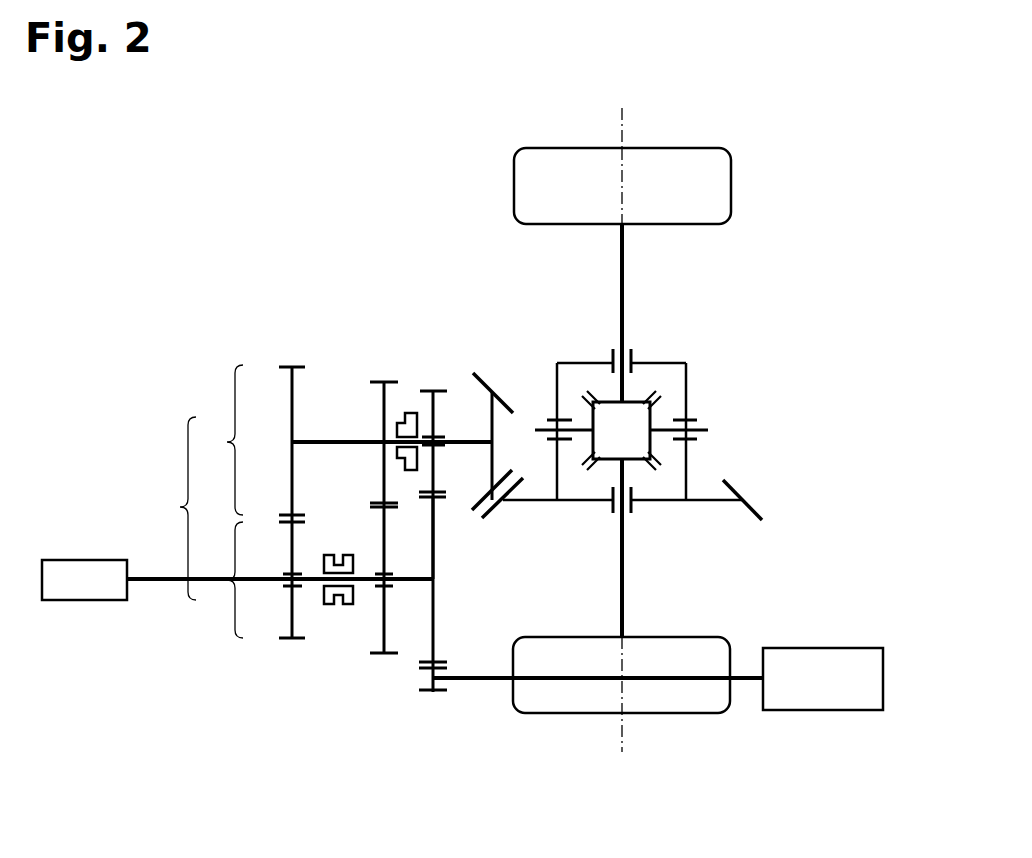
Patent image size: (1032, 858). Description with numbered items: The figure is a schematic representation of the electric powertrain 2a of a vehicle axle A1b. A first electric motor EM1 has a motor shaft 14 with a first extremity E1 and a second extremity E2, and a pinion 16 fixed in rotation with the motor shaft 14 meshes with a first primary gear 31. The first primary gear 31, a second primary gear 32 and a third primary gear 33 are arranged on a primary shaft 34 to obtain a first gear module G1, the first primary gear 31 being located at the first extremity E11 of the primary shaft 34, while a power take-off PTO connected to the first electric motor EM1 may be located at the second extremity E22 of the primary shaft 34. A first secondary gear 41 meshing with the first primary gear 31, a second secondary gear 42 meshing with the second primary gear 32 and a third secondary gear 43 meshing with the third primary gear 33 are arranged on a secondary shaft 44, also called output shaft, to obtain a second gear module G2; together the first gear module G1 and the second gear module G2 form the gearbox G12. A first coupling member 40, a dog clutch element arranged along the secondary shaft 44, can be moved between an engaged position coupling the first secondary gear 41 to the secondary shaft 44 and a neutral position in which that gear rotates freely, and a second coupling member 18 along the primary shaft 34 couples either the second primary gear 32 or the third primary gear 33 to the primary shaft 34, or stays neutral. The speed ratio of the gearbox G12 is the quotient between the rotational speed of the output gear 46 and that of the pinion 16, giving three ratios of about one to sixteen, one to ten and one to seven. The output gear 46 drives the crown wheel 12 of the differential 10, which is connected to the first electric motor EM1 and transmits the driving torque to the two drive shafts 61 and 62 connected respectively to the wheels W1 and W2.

The electric powertrain 2a is at (823, 462).
The differential 10 is at (707, 390).
The crown wheel 12 is at (717, 502).
The motor shaft 14 is at (467, 676).
The pinion 16 is at (430, 682).
The second coupling member 18 is at (330, 607).
The first primary gear 31 is at (435, 627).
The second primary gear 32 is at (380, 614).
The third primary gear 33 is at (283, 615).
The primary shaft 34 is at (278, 578).
The first coupling member 40 is at (407, 413).
The first secondary gear 41 is at (433, 409).
The second secondary gear 42 is at (384, 413).
The third secondary gear 43 is at (292, 385).
The secondary shaft 44 is at (472, 443).
The output gear 46 is at (492, 417).
The drive shaft 61 is at (622, 555).
The drive shaft 62 is at (622, 267).
The axle A1b is at (648, 429).
The first extremity E1 is at (742, 677).
The second extremity E2 is at (492, 682).
The first extremity E11 is at (433, 557).
The second extremity E22 is at (157, 583).
The first gear module G1 is at (280, 580).
The second gear module G2 is at (344, 440).
The gearbox G12 is at (163, 508).
The wheel W1 is at (682, 713).
The wheel W2 is at (731, 176).
The power take-off PTO is at (84, 580).
The first electric motor EM1 is at (823, 679).